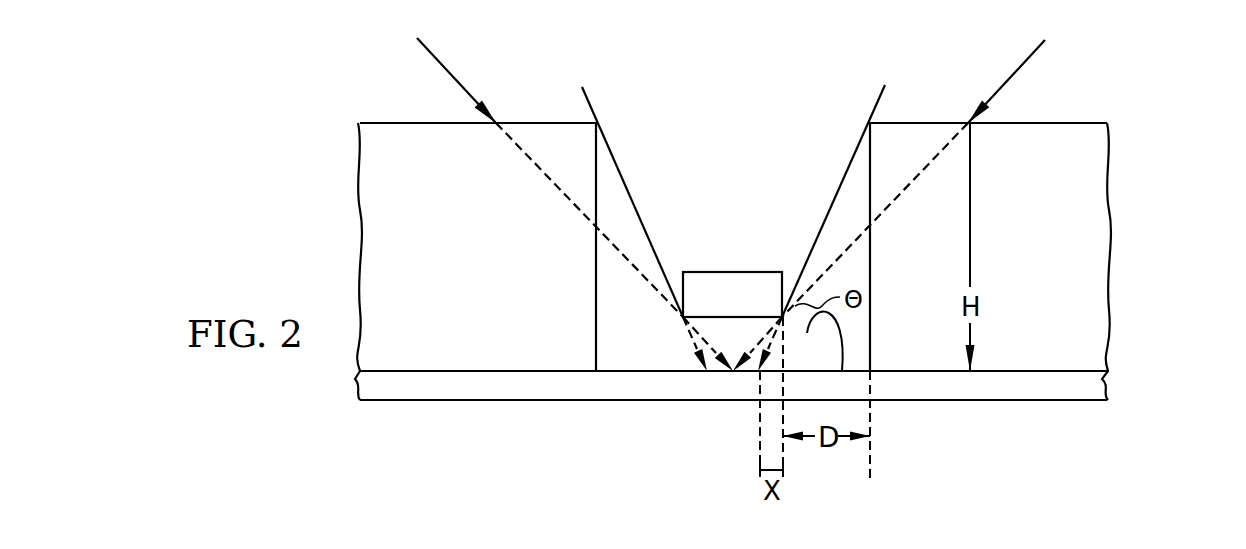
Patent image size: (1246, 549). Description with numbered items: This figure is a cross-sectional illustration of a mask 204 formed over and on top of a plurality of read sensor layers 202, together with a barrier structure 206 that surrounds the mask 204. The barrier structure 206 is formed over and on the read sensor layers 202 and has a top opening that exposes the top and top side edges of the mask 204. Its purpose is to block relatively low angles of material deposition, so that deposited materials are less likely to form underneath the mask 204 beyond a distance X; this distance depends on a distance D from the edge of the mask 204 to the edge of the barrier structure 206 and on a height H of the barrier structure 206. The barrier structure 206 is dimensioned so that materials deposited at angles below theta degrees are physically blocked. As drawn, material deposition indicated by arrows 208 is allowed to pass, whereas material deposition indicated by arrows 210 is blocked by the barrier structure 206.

The read sensor layers 202 is at (1110, 381).
The mask 204 is at (732, 272).
The barrier structure 206 is at (392, 158).
The arrows indicating allowed material deposition 208 is at (593, 108).
The arrows indicating blocked material deposition 210 is at (445, 68).